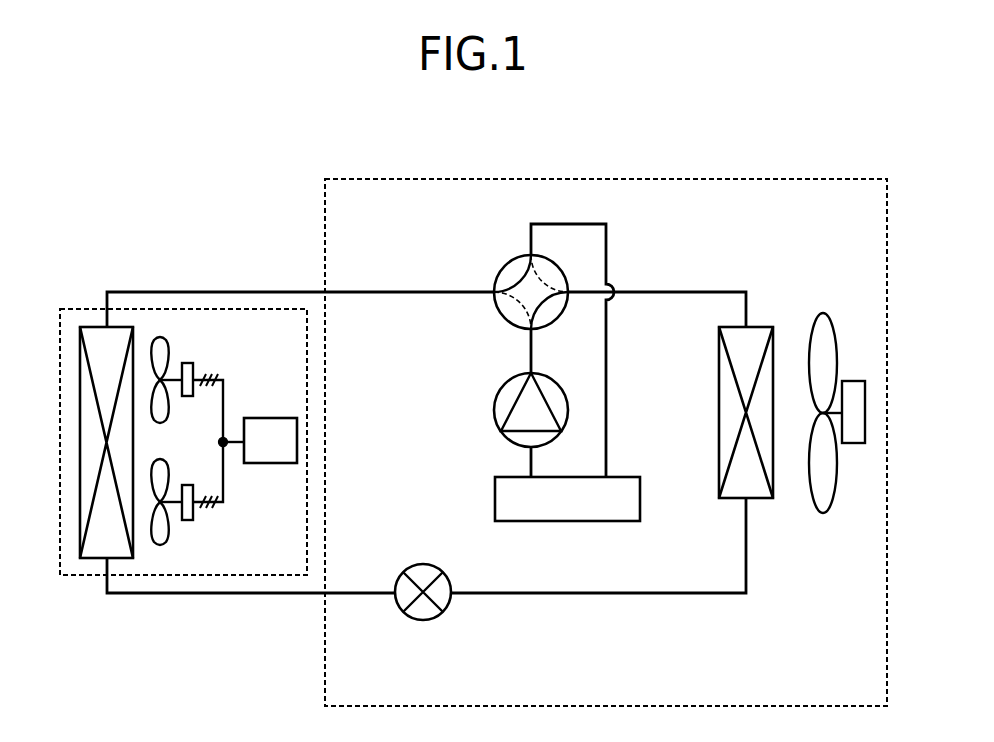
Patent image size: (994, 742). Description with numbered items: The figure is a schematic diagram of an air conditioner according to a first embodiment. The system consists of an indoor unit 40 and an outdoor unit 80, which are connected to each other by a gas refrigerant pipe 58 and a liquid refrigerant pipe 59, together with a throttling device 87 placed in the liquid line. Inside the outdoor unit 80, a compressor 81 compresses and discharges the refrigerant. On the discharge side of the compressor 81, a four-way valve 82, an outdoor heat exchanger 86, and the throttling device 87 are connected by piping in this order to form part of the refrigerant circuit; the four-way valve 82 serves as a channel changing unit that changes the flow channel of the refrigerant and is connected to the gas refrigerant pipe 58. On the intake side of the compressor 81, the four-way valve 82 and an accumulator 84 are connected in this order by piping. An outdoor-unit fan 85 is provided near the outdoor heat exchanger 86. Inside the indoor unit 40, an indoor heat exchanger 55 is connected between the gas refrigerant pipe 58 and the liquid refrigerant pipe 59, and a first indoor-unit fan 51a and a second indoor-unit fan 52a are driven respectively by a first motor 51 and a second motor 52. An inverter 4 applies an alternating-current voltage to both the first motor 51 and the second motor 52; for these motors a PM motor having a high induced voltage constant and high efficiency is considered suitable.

The inverter 4 is at (270, 418).
The indoor unit 40 is at (85, 576).
The first motor 51 is at (188, 363).
The first indoor-unit fan 51a is at (160, 337).
The second motor 52 is at (188, 485).
The second indoor-unit fan 52a is at (160, 548).
The indoor heat exchanger 55 is at (92, 327).
The gas refrigerant pipe 58 is at (285, 292).
The liquid refrigerant pipe 59 is at (285, 593).
The outdoor unit 80 is at (630, 179).
The compressor 81 is at (498, 390).
The four-way valve 82 is at (507, 264).
The accumulator 84 is at (495, 500).
The outdoor-unit fan 85 is at (823, 304).
The outdoor heat exchanger 86 is at (763, 327).
The throttling device 87 is at (423, 622).